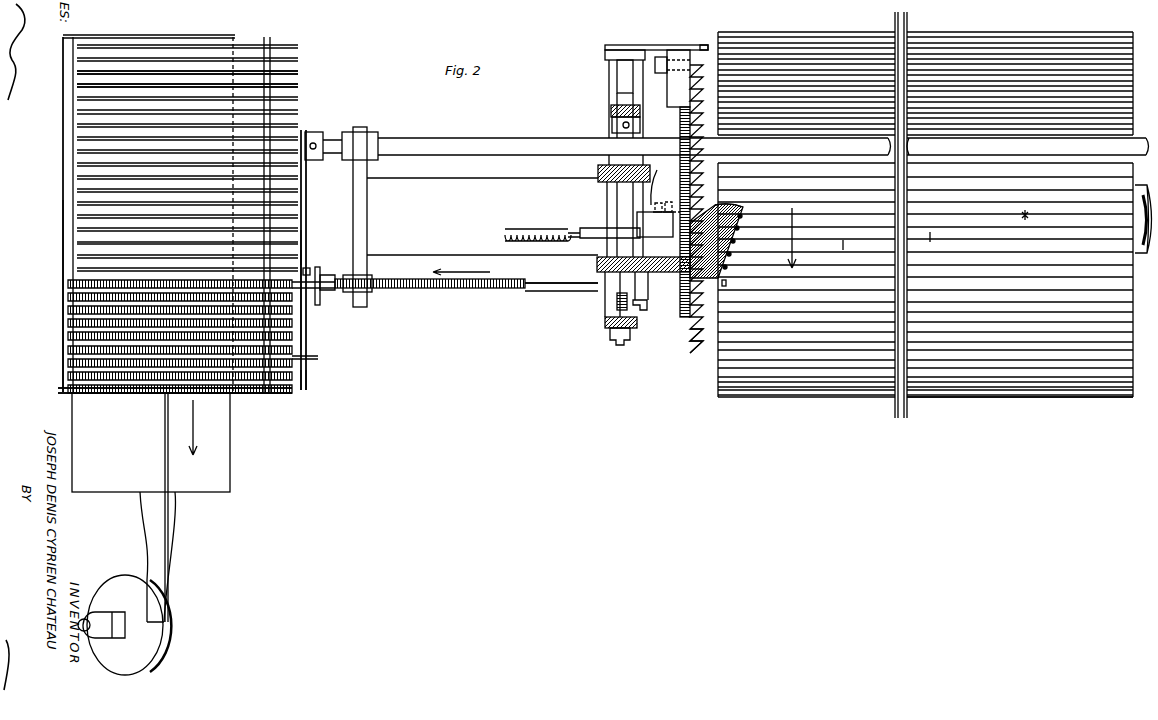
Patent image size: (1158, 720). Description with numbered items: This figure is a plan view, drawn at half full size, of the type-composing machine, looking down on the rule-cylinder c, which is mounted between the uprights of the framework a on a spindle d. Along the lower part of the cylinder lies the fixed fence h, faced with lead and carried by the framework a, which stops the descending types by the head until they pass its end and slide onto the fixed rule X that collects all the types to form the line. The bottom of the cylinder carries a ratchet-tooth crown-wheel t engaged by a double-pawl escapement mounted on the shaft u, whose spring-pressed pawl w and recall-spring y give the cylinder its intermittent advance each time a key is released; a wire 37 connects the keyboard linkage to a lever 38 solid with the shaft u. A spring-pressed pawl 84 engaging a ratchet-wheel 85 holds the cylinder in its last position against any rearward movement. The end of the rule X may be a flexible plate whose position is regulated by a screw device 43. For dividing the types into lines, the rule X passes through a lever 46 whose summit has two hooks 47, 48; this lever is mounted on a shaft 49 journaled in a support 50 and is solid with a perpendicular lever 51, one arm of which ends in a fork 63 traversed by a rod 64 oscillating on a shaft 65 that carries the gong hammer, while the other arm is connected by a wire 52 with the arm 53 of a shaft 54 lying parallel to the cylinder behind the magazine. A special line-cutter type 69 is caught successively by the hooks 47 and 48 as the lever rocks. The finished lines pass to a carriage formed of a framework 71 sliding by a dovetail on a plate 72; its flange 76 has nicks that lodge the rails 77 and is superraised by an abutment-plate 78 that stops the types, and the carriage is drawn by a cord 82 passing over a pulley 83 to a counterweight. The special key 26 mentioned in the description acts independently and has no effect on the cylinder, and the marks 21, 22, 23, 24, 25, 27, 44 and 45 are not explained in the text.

The mark on roller 21 is at (1028, 215).
The tooth of segment 22 is at (742, 216).
The tooth of segment 23 is at (739, 228).
The tooth of segment 24 is at (735, 241).
The tooth of segment 25 is at (731, 254).
The special key 26 is at (727, 267).
The stop pin 27 is at (727, 284).
The wire 37 is at (706, 41).
The lever 38 is at (657, 46).
The screw device 43 is at (648, 305).
The roller line 44 is at (930, 238).
The roller line 45 is at (843, 248).
The lever 46 is at (311, 272).
The hook 47 is at (349, 294).
The hook 48 is at (307, 258).
The shaft 49 is at (352, 300).
The support 50 is at (367, 208).
The perpendicular lever 51 is at (307, 243).
The wire 52 is at (309, 215).
The arm 53 is at (307, 196).
The shaft 54 is at (525, 148).
The fork 63 is at (307, 383).
The rod 64 is at (320, 358).
The shaft 65 is at (289, 328).
The line-cutter type 69 is at (322, 277).
The framework of carriage 71 is at (196, 217).
The plate 72 is at (151, 442).
The upper flange 76 is at (80, 393).
The rails 77 is at (298, 98).
The abutment-plate 78 is at (64, 270).
The cord 82 is at (165, 462).
The pulley 83 is at (124, 625).
The spring-pressed pawl 84 is at (672, 78).
The ratchet-wheel 85 is at (680, 123).
The framework a is at (1082, 216).
The rule-cylinder c is at (947, 388).
The spindle d is at (660, 182).
The fixed fence h is at (745, 205).
The ratchet-tooth crown-wheel t is at (690, 354).
The shaft u is at (617, 213).
The spring-pressed pawl w is at (690, 210).
The fixed rule X is at (560, 287).
The recall-spring y is at (540, 230).